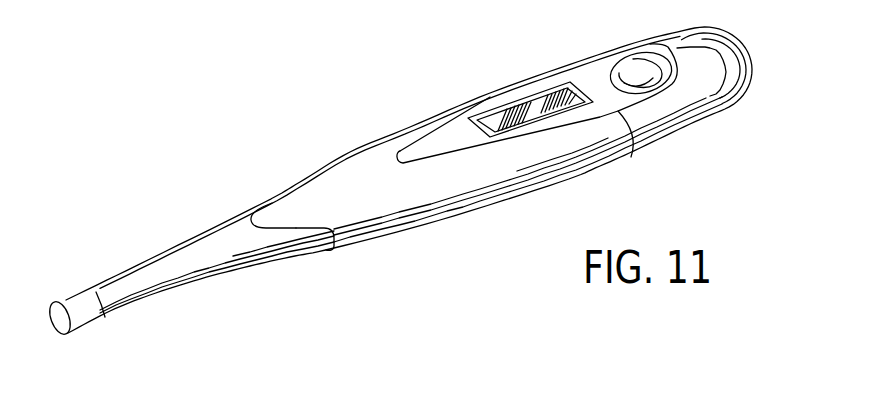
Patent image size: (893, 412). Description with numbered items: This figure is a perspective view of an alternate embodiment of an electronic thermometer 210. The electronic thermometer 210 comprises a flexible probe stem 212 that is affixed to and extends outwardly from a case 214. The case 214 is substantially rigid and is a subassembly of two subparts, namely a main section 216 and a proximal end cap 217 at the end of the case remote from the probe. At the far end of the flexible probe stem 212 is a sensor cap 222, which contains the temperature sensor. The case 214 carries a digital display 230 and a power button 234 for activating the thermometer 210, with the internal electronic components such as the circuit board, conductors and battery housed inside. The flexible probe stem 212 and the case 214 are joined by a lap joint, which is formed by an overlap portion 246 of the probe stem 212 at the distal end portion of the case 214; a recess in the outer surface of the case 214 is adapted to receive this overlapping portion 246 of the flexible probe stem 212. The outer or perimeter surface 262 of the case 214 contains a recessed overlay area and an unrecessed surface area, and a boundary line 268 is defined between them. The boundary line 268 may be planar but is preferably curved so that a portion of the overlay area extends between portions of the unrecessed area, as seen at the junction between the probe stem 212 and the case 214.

The electronic thermometer 210 is at (269, 170).
The flexible probe stem 212 is at (180, 272).
The sensor cap 222 is at (83, 313).
The boundary line 268 is at (283, 230).
The overlap portion 246 is at (316, 237).
The outer surface 262 is at (450, 192).
The main section 216 is at (508, 183).
The case 214 is at (624, 167).
The proximal end cap 217 is at (695, 89).
The digital display 230 is at (513, 109).
The power button 234 is at (634, 72).